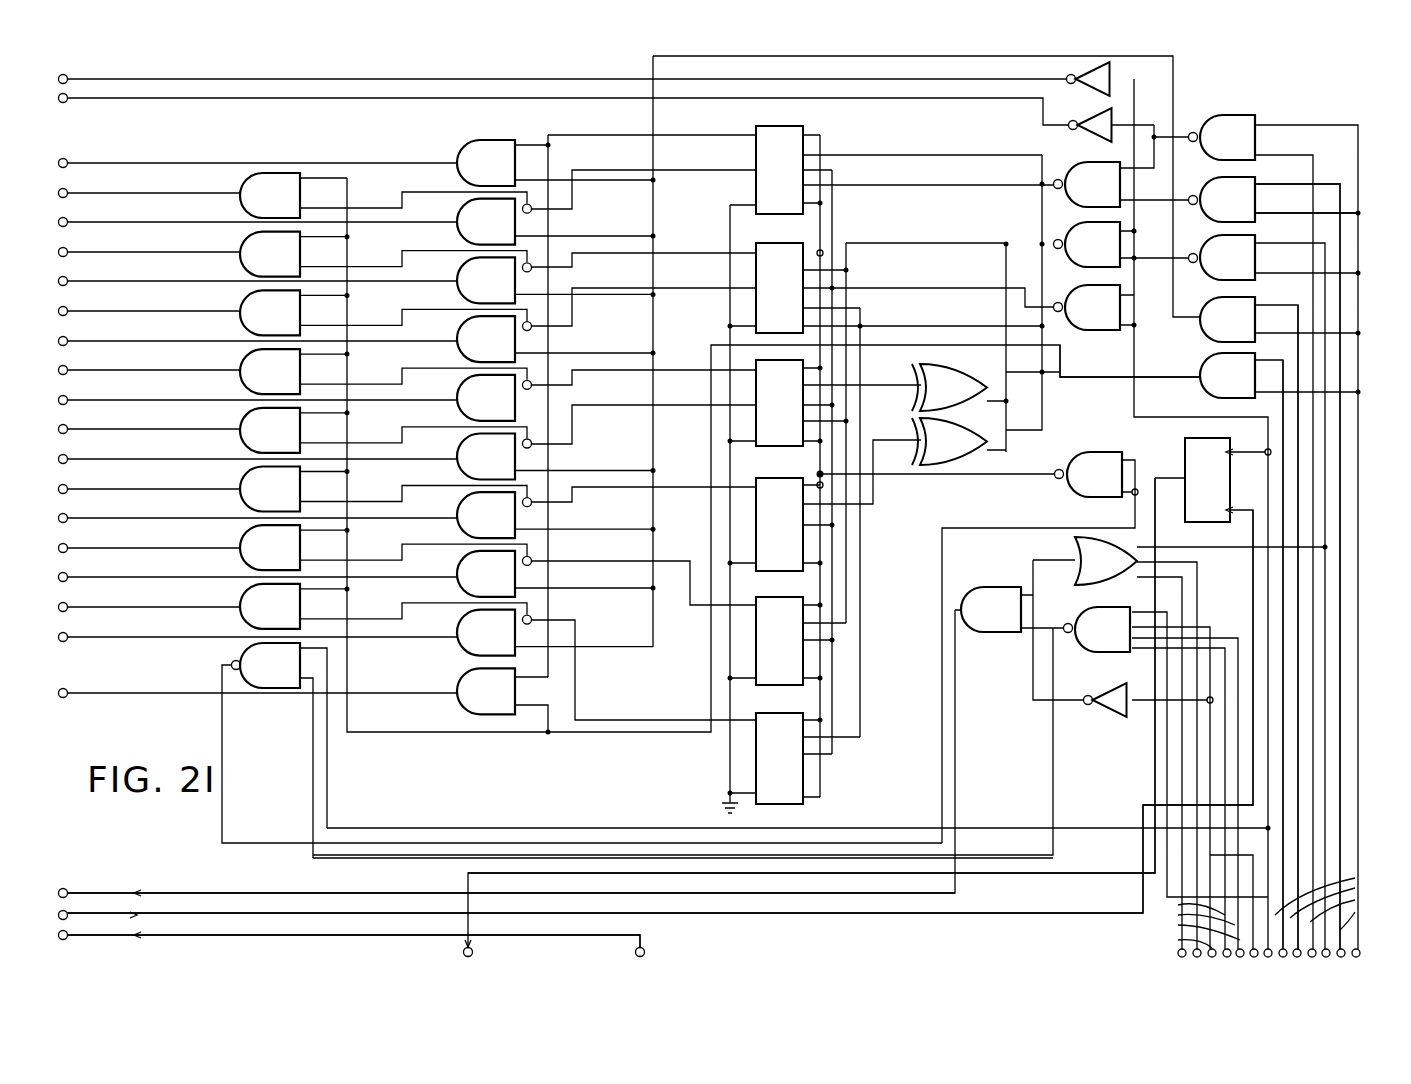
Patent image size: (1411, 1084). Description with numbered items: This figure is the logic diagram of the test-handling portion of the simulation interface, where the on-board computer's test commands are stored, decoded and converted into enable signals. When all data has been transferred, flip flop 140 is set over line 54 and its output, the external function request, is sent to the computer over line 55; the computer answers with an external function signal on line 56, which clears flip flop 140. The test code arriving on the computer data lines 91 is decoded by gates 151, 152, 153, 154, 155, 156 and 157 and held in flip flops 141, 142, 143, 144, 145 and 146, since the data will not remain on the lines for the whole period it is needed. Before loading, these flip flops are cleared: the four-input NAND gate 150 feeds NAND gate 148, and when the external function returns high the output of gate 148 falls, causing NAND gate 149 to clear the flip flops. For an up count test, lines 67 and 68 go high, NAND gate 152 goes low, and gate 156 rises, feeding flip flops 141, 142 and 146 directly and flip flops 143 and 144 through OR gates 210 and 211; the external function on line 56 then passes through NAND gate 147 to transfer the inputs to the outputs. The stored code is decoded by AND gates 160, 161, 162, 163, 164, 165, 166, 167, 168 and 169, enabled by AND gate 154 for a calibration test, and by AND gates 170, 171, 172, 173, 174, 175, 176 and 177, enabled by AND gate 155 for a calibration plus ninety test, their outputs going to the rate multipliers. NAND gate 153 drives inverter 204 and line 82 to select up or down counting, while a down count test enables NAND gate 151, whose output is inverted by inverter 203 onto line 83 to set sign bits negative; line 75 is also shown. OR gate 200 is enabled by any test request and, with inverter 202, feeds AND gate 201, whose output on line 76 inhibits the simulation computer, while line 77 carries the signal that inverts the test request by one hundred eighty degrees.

The line 82 is at (67, 77).
The line 83 is at (67, 96).
The reset line 75 is at (883, 54).
The AND gate 170 is at (243, 188).
The AND gate 171 is at (243, 247).
The AND gate 172 is at (243, 306).
The AND gate 173 is at (243, 364).
The AND gate 174 is at (243, 423).
The AND gate 175 is at (243, 482).
The AND gate 176 is at (243, 540).
The AND gate 177 is at (243, 599).
The NAND gate 148 is at (239, 658).
The AND gate 160 is at (488, 146).
The AND gate 161 is at (457, 214).
The AND gate 162 is at (457, 273).
The AND gate 163 is at (457, 331).
The AND gate 164 is at (457, 390).
The AND gate 165 is at (457, 449).
The AND gate 166 is at (457, 508).
The AND gate 167 is at (457, 567).
The AND gate 168 is at (457, 625).
The AND gate 169 is at (457, 684).
The flip flop 141 is at (801, 138).
The flip flop 142 is at (774, 248).
The flip flop 143 is at (786, 446).
The flip flop 144 is at (786, 568).
The flip flop 145 is at (786, 683).
The flip flop 146 is at (802, 803).
The inverter 204 is at (1110, 66).
The inverter 203 is at (1093, 118).
The NAND gate 151 is at (1244, 122).
The NAND gate 152 is at (1216, 184).
The NAND gate 153 is at (1216, 242).
The AND gate 154 is at (1216, 303).
The AND gate 155 is at (1218, 360).
The NAND gate 156 is at (1082, 168).
The gate 157 is at (1080, 230).
The NAND gate 147 is at (1080, 294).
The NAND gate 149 is at (1101, 456).
The OR gate 210 is at (923, 374).
The OR gate 211 is at (931, 430).
The flip flop 140 is at (1210, 444).
The OR gate 200 is at (1079, 553).
The AND gate 201 is at (1000, 592).
The NAND gate 150 is at (1090, 613).
The inverter 202 is at (1124, 691).
The line 56 is at (390, 830).
The line 55 is at (1160, 514).
The line 54 is at (1244, 511).
The line 67 is at (1356, 926).
The line 68 is at (1356, 950).
The data lines 91 is at (1273, 627).
The line 76 is at (67, 891).
The line 77 is at (67, 933).